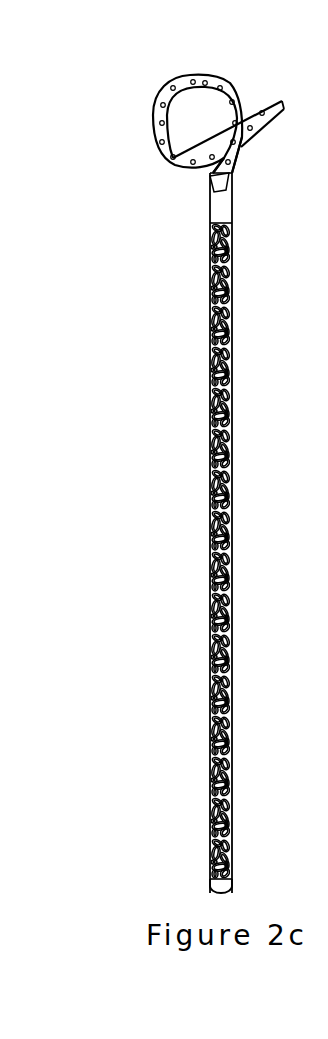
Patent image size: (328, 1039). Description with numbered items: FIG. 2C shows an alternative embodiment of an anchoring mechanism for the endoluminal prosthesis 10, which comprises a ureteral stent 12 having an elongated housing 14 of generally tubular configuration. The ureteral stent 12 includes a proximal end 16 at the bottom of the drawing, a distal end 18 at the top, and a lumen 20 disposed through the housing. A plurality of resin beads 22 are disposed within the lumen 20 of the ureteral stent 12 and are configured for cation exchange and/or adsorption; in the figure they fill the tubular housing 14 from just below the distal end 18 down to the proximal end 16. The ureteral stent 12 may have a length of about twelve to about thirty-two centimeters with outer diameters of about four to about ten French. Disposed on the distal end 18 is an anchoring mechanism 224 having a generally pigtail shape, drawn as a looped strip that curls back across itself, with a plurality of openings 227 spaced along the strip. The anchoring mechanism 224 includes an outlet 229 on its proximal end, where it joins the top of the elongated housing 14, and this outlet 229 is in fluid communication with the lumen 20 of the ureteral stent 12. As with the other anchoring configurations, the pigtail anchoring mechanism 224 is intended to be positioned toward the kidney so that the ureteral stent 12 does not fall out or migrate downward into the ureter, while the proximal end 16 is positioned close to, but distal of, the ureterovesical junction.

The prosthesis 10 is at (135, 297).
The ureteral stent 12 is at (211, 440).
The elongated housing 14 is at (206, 547).
The proximal end 16 is at (207, 881).
The distal end 18 is at (204, 182).
The lumen 20 is at (233, 232).
The resin beads 22 is at (233, 711).
The anchoring mechanism 224 is at (240, 144).
The openings 227 is at (178, 80).
The outlet 229 is at (233, 183).